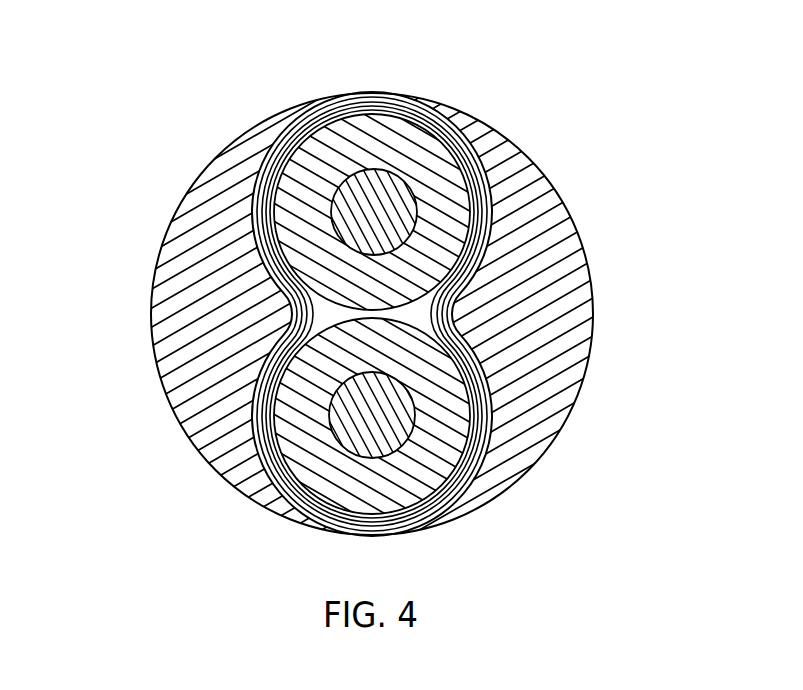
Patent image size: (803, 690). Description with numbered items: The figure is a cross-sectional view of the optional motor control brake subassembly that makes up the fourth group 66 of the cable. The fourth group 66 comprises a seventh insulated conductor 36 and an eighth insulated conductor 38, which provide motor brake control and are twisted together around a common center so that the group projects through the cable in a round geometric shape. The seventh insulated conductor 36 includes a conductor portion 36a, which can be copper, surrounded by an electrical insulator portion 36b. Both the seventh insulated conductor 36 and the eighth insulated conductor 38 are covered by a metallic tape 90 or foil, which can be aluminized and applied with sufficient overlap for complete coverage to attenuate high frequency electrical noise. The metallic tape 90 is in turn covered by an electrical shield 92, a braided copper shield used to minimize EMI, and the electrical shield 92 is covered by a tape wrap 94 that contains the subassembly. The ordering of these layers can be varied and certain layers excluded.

The fourth group 66 is at (188, 114).
The seventh insulated conductor 36 is at (366, 345).
The conductor portion 36a is at (398, 165).
The electrical insulator portion 36b is at (441, 241).
The eighth insulated conductor 38 is at (352, 410).
The metallic tape 90 is at (472, 325).
The electrical shield 92 is at (502, 408).
The tape wrap 94 is at (481, 497).